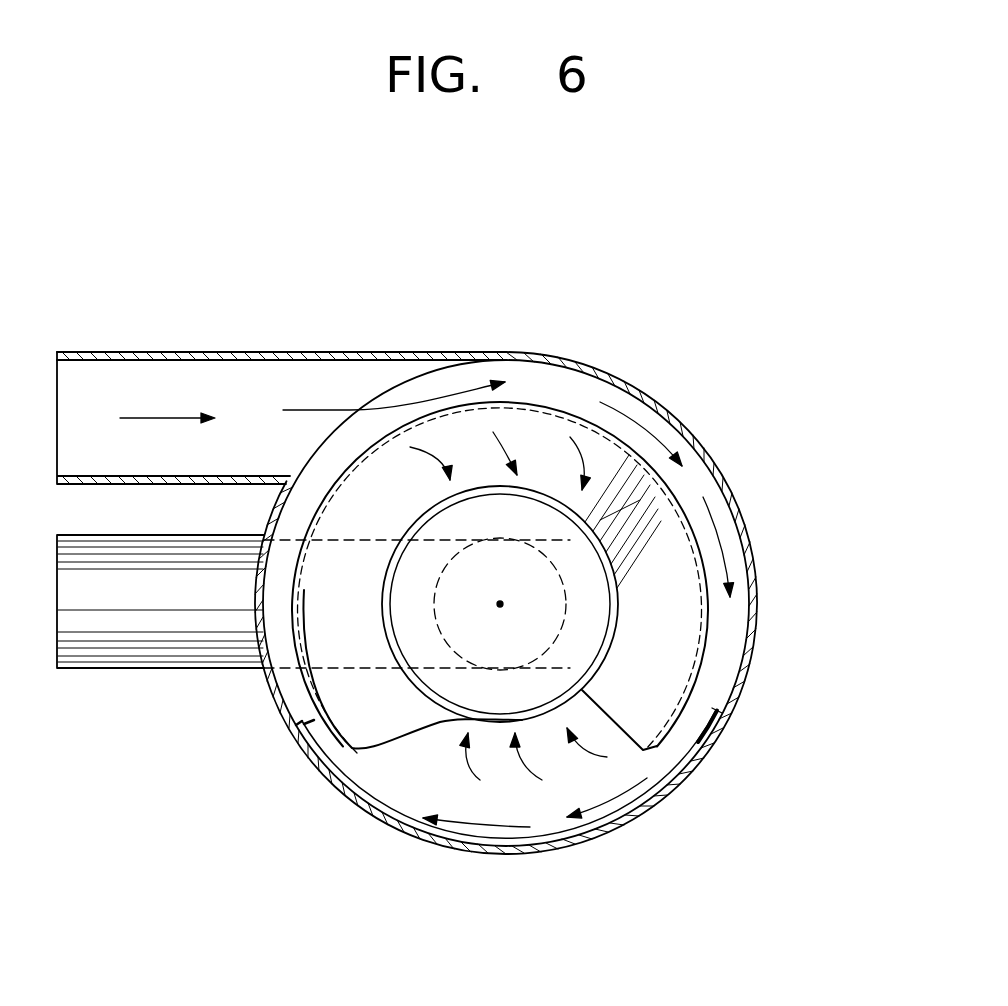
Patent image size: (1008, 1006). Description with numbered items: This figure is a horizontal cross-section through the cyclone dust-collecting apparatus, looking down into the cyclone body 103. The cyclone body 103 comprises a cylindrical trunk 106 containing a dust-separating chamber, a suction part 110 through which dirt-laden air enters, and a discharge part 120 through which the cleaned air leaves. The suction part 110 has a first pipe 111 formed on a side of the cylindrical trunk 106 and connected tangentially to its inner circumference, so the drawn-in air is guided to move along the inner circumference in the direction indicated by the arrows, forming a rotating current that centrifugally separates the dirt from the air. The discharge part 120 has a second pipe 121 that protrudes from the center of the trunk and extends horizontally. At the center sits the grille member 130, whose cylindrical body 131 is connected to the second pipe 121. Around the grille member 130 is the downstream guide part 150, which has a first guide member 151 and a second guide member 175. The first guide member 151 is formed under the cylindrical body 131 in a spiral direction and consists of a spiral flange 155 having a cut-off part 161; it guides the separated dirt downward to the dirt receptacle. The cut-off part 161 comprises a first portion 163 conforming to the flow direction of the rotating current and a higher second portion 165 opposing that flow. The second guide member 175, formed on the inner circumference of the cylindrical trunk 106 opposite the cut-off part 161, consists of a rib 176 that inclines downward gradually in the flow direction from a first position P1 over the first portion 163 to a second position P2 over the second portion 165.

The cyclone body 103 is at (640, 376).
The cylindrical trunk 106 is at (690, 440).
The suction part 110 is at (150, 352).
The first pipe 111 is at (286, 352).
The discharge part 120 is at (70, 672).
The second pipe 121 is at (118, 660).
The grille member 130 is at (478, 482).
The cylindrical body 131 is at (540, 492).
The downstream guide part 150 is at (593, 607).
The first guide member 151 is at (716, 630).
The spiral flange 155 is at (680, 565).
The cut-off part 161 is at (480, 773).
The first portion 163 is at (603, 712).
The second portion 165 is at (412, 730).
The second guide member 175 is at (753, 760).
The rib 176 is at (648, 800).
The first position P1 is at (718, 712).
The second position P2 is at (303, 725).